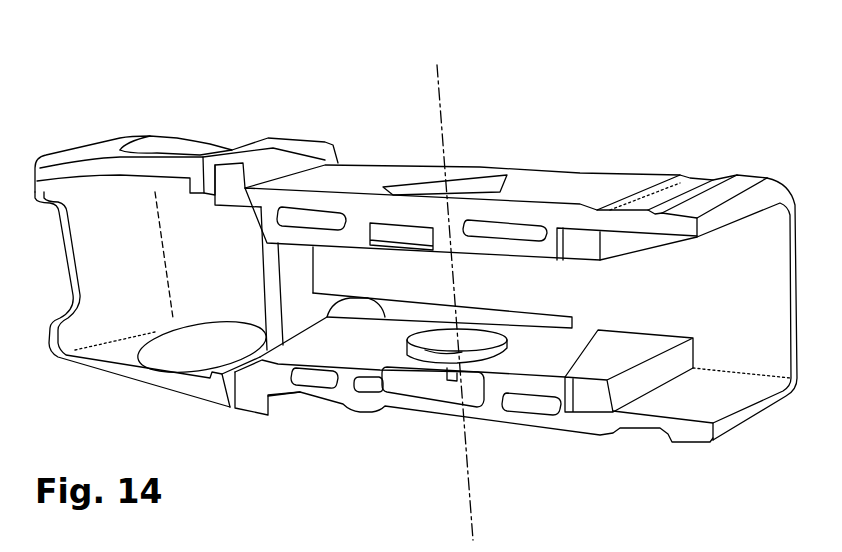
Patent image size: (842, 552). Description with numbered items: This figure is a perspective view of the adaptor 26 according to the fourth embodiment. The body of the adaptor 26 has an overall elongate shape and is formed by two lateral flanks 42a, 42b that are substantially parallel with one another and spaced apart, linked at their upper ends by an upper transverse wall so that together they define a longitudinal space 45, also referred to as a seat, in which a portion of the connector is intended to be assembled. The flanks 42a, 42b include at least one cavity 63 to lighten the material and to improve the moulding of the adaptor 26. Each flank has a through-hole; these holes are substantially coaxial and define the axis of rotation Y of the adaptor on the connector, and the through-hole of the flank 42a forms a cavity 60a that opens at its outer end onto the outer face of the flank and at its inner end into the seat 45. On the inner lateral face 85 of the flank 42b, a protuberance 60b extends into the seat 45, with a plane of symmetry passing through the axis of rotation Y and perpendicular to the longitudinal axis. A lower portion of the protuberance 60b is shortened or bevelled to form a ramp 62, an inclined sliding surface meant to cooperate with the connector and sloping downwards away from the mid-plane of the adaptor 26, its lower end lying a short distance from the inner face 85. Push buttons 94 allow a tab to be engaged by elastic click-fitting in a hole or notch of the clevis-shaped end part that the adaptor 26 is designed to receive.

The adaptor 26 is at (605, 77).
The lateral flank 42a is at (583, 187).
The lateral flank 42b is at (575, 427).
The longitudinal space 45 is at (123, 295).
The cavity 60a is at (422, 185).
The protuberance 60b is at (467, 338).
The ramp 62 is at (472, 335).
The cavity 63 is at (290, 205).
The inner lateral face 85 is at (387, 350).
The push button 94 is at (158, 147).
The axis of rotation Y is at (440, 92).